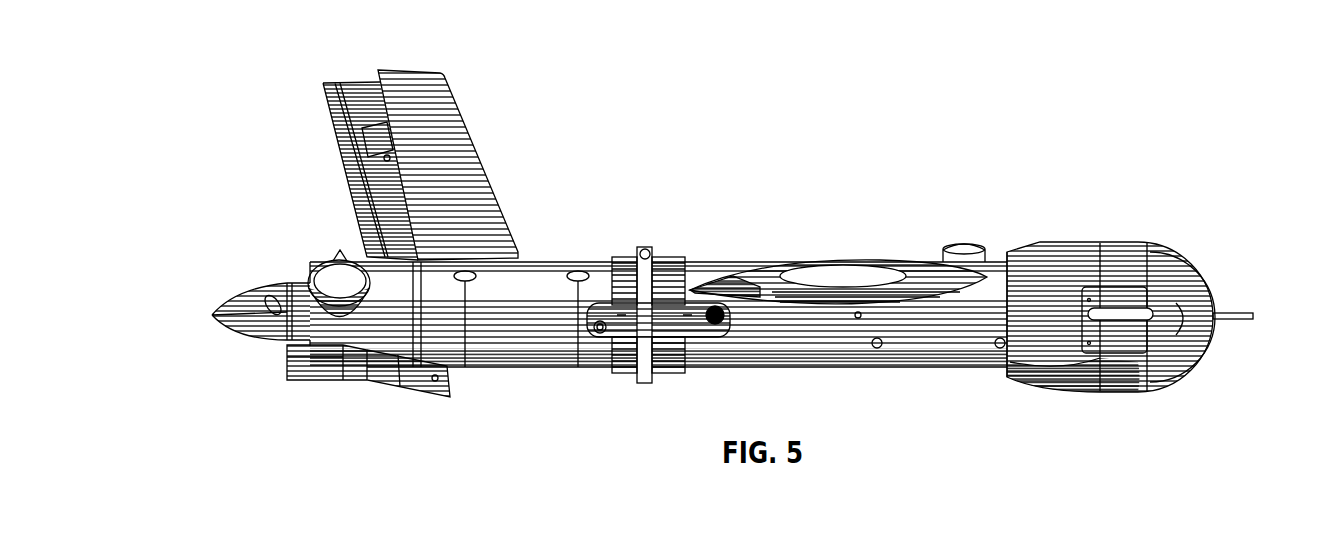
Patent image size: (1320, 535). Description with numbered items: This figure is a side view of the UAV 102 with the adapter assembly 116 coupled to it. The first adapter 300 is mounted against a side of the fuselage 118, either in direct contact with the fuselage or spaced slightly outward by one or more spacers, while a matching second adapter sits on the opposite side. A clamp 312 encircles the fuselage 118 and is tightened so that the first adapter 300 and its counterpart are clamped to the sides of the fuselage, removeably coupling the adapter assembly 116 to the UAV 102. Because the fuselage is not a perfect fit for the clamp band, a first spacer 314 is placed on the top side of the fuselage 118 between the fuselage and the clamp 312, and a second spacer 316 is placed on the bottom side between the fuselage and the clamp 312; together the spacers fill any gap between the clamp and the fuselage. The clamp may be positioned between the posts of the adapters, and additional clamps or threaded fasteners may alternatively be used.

The UAV 102 is at (987, 273).
The adapter assembly 116 is at (642, 303).
The fuselage 118 is at (733, 274).
The first adapter 300 is at (620, 322).
The clamp 312 is at (645, 249).
The first spacer 314 is at (666, 279).
The second spacer 316 is at (663, 358).